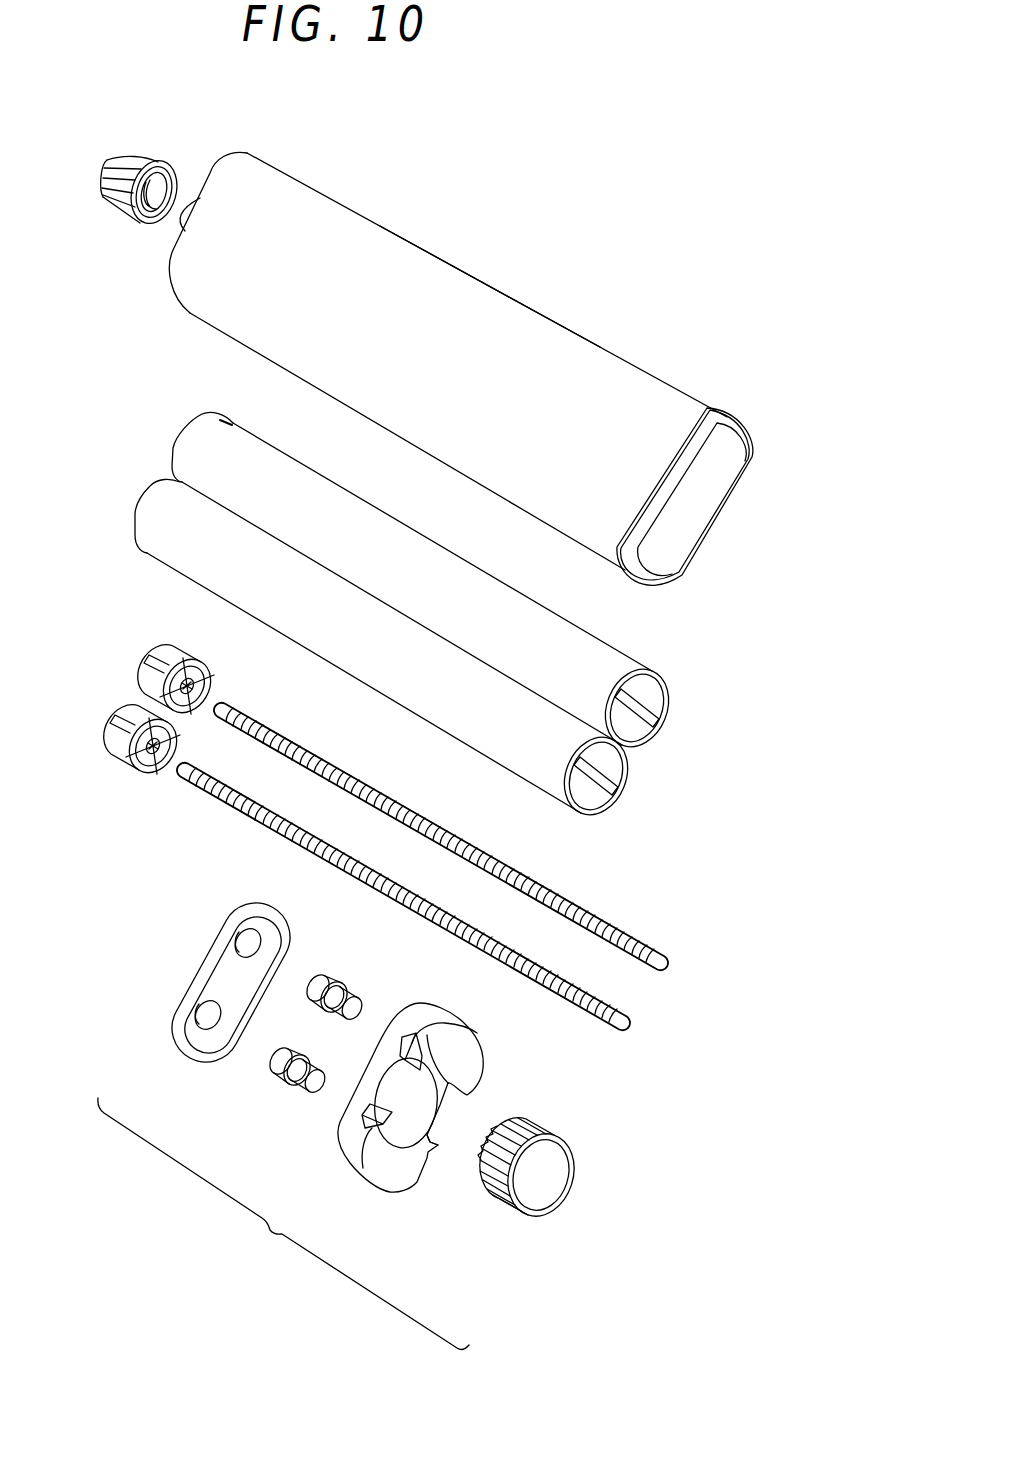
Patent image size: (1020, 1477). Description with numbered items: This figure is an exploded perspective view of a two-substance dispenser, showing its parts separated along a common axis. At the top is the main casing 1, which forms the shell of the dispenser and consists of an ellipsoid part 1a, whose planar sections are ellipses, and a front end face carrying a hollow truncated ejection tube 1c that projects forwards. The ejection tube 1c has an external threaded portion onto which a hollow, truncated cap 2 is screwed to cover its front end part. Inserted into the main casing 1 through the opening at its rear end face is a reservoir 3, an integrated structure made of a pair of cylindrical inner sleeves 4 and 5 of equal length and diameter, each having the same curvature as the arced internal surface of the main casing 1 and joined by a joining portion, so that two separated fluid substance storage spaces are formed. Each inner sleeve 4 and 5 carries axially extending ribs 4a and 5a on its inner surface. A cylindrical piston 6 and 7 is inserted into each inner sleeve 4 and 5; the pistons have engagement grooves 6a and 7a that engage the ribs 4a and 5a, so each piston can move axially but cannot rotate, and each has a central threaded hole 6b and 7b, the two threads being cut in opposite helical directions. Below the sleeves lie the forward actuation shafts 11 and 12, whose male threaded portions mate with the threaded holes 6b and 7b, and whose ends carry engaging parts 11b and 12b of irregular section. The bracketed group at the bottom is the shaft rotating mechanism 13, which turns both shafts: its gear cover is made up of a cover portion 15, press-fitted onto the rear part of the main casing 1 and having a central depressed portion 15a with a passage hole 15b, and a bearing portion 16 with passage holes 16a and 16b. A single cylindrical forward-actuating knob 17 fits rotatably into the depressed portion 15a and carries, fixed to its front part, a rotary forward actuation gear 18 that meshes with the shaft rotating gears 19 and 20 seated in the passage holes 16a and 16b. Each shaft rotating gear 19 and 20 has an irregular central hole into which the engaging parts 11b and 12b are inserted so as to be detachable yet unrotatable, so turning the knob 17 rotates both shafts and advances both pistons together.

The main casing 1 is at (468, 258).
The ellipsoid part 1a is at (557, 338).
The ejection tube 1c is at (195, 190).
The cap 2 is at (113, 202).
The reservoir 3 is at (66, 395).
The inner sleeve 4 is at (408, 580).
The rib 4a is at (655, 712).
The inner sleeve 5 is at (389, 644).
The rib 5a is at (628, 790).
The piston 6 is at (181, 659).
The engagement groove 6a is at (158, 666).
The threaded hole 6b is at (195, 682).
The piston 7 is at (120, 764).
The engagement groove 7a is at (122, 728).
The threaded hole 7b is at (152, 757).
The forward actuation shaft 11 is at (471, 836).
The engaging part 11b is at (666, 960).
The forward actuation shaft 12 is at (447, 915).
The engaging part 12b is at (633, 1032).
The shaft rotating mechanism 13 is at (350, 1115).
The cover portion 15 is at (410, 1114).
The depressed portion 15a is at (432, 1150).
The passage hole 15b is at (407, 1103).
The bearing portion 16 is at (210, 971).
The passage hole 16a is at (246, 944).
The passage hole 16b is at (204, 1016).
The forward-actuating knob 17 is at (540, 1136).
The rotary forward actuation gear 18 is at (498, 1126).
The shaft rotating gear 19 is at (347, 978).
The shaft rotating gear 20 is at (285, 1093).